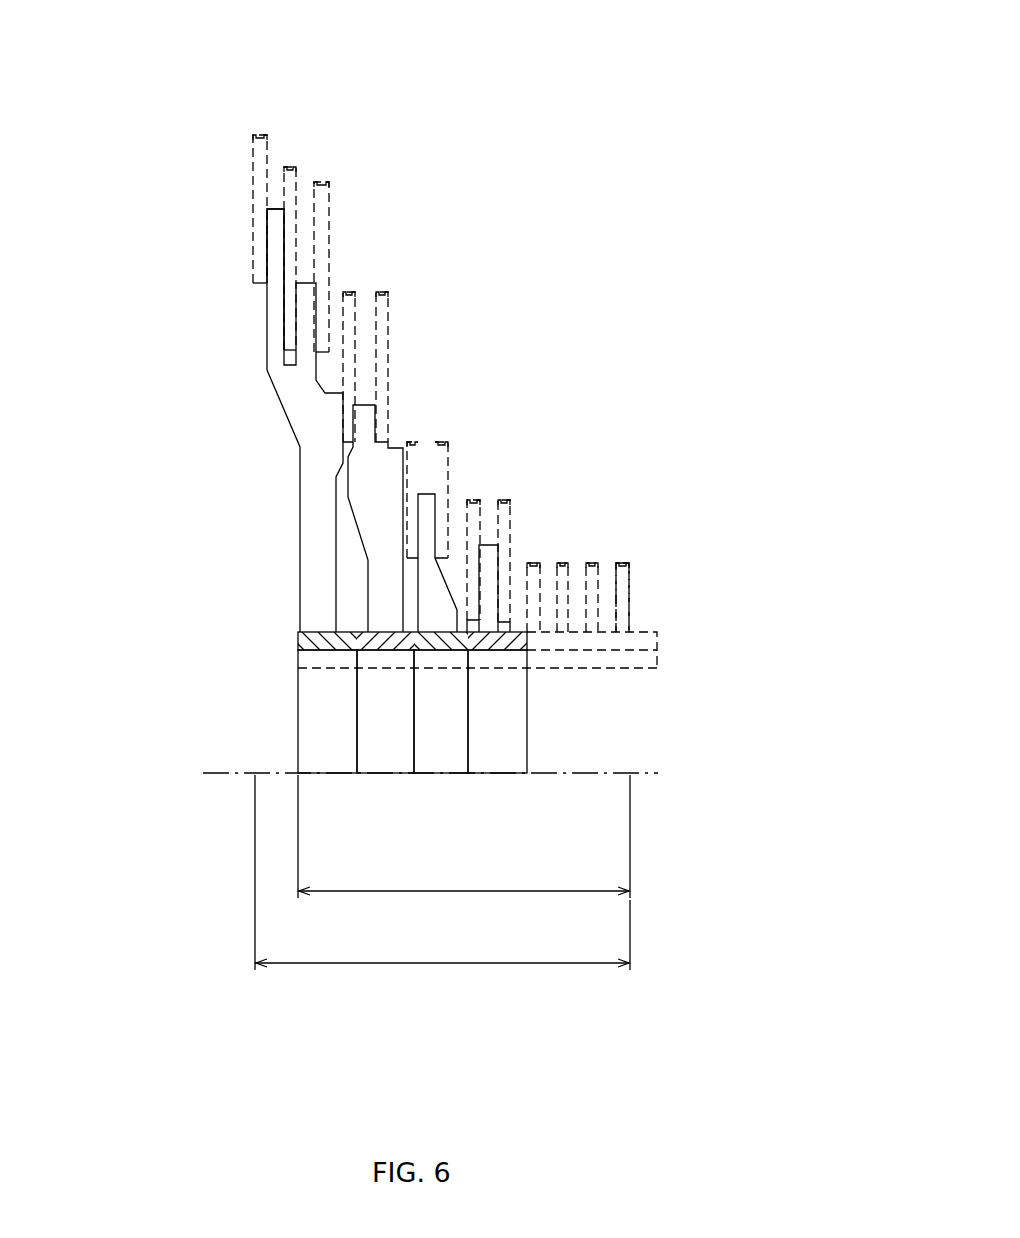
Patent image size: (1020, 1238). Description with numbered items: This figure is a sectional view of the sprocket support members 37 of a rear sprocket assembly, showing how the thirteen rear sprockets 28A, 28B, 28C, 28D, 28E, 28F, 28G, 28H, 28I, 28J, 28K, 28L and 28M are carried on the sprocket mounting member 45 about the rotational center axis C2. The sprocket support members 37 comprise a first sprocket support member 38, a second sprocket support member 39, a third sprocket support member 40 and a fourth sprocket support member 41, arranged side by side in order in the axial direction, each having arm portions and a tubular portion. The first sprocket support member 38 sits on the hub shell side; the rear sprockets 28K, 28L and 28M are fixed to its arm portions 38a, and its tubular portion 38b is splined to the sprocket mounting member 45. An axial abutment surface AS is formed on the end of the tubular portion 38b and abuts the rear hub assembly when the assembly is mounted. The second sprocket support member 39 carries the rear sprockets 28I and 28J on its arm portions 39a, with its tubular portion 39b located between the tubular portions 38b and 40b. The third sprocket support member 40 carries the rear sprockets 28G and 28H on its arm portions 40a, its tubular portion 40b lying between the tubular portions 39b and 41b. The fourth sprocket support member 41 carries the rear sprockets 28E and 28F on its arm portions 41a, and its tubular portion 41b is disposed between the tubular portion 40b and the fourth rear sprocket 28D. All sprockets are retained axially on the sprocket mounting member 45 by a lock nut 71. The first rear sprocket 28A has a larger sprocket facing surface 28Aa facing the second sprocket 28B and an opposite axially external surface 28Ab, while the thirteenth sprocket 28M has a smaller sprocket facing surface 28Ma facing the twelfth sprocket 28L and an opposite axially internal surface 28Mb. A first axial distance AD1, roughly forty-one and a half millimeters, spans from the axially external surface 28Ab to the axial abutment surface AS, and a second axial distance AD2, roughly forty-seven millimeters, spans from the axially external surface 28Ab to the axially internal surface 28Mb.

The first rear sprocket 28A is at (800, 555).
The larger sprocket facing surface 28Aa is at (613, 583).
The axially external surface 28Ab is at (633, 598).
The second rear sprocket 28B is at (624, 561).
The third rear sprocket 28C is at (592, 561).
The fourth rear sprocket 28D is at (562, 561).
The fifth rear sprocket 28E is at (533, 562).
The sixth rear sprocket 28F is at (504, 500).
The seventh rear sprocket 28G is at (472, 498).
The eighth rear sprocket 28H is at (412, 441).
The ninth rear sprocket 28I is at (382, 293).
The tenth rear sprocket 28J is at (349, 292).
The eleventh rear sprocket 28K is at (322, 181).
The twelfth rear sprocket 28L is at (290, 166).
The thirteenth rear sprocket 28M is at (123, 100).
The smaller sprocket facing surface 28Ma is at (263, 140).
The axially internal surface 28Mb is at (268, 210).
The sprocket support members 37 is at (190, 473).
The first sprocket support member 38 is at (298, 487).
The arm portions of first sprocket support member 38a is at (290, 390).
The tubular portion of first sprocket support member 38b is at (333, 647).
The second sprocket support member 39 is at (360, 548).
The arm portions of second sprocket support member 39a is at (360, 477).
The tubular portion of second sprocket support member 39b is at (390, 647).
The third sprocket support member 40 is at (417, 592).
The arm portions of third sprocket support member 40a is at (428, 512).
The tubular portion of third sprocket support member 40b is at (436, 647).
The fourth sprocket support member 41 is at (475, 612).
The arm portions of fourth sprocket support member 41a is at (488, 558).
The tubular portion of fourth sprocket support member 41b is at (493, 643).
The sprocket mounting member 45 is at (672, 672).
The lock nut 71 is at (645, 642).
The axial abutment surface AS is at (298, 637).
The rotational center axis C2 is at (429, 772).
The first axial distance AD1 is at (464, 836).
The second axial distance AD2 is at (442, 872).